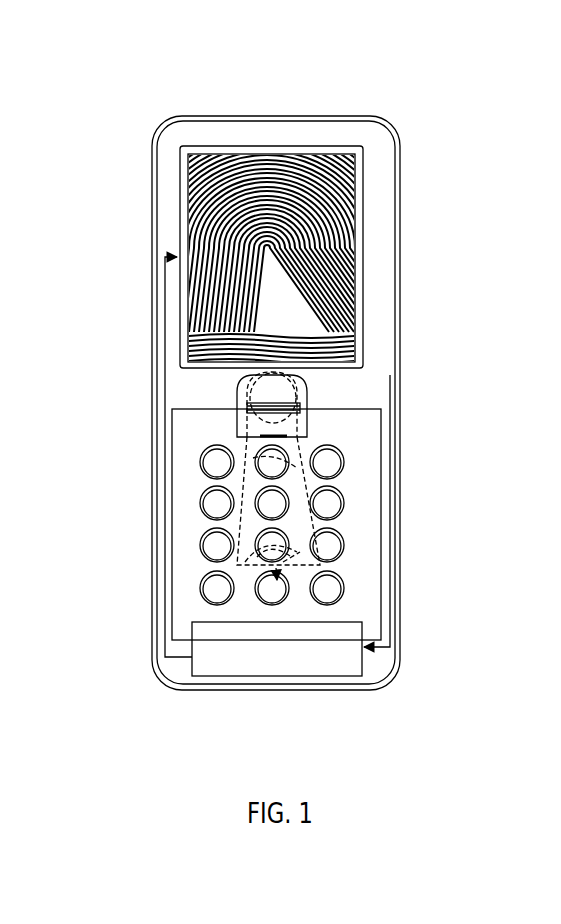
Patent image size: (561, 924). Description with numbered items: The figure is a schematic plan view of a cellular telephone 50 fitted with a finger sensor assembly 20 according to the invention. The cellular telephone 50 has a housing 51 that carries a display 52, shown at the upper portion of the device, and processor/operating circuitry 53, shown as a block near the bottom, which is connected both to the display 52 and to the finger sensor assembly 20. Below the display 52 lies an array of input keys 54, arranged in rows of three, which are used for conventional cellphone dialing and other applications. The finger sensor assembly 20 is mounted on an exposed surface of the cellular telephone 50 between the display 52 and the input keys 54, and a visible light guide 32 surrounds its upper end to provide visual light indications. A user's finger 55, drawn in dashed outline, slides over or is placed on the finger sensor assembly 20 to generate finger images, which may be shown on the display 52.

The cellular telephone 50 is at (170, 123).
The housing 51 is at (151, 214).
The display 52 is at (189, 237).
The finger sensor assembly 20 is at (237, 388).
The visible light guide 32 is at (303, 395).
The finger 55 is at (237, 409).
The input keys 54 is at (212, 590).
The processor/operating circuitry 53 is at (340, 675).